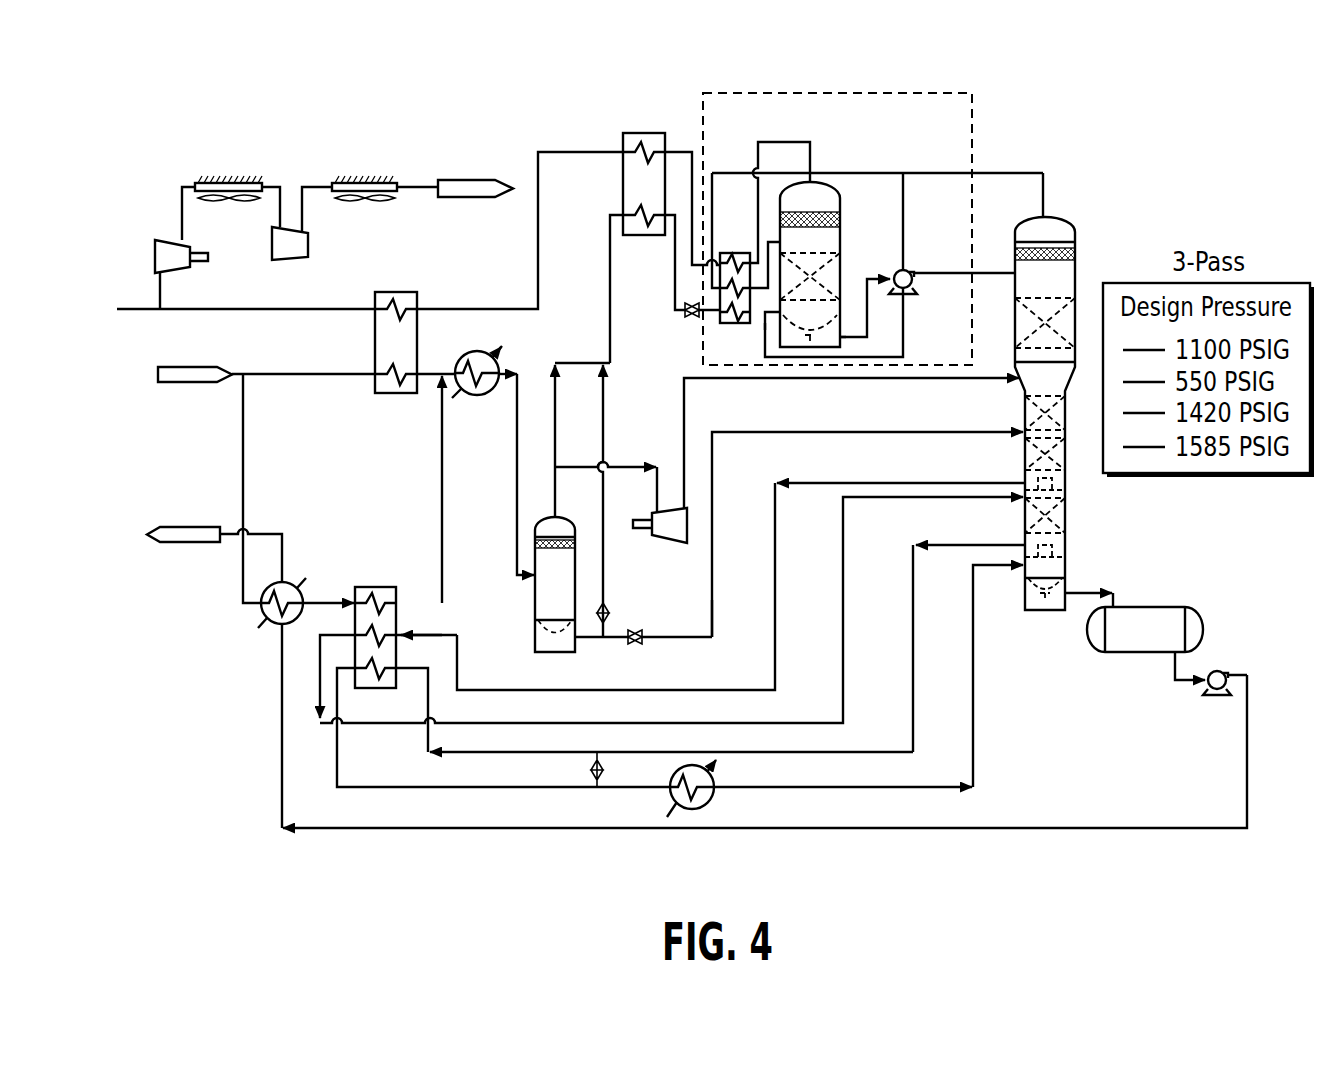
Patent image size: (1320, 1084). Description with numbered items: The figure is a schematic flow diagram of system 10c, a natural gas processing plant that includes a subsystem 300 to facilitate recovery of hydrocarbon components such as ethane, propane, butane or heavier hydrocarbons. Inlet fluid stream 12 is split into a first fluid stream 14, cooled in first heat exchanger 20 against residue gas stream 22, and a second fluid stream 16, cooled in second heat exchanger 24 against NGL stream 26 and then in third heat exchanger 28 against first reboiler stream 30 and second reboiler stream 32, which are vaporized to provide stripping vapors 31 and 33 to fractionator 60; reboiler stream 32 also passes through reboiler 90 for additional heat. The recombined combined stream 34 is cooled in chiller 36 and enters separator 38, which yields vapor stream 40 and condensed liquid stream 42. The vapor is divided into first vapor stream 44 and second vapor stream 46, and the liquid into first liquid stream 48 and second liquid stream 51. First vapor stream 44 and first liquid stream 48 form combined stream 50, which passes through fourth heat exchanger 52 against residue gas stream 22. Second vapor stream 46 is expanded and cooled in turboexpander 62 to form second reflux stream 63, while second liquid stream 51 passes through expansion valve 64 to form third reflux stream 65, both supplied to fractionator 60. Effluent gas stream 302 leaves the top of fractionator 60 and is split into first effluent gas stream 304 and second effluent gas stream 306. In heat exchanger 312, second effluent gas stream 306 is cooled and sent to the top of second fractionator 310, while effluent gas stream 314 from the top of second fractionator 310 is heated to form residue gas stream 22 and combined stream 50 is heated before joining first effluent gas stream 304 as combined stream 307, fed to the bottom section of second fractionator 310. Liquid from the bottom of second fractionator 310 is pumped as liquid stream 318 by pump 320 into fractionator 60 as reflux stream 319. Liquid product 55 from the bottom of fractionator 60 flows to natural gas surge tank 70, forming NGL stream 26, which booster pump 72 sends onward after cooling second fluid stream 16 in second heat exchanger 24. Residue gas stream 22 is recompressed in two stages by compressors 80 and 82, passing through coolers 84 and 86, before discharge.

The system 10c is at (1120, 80).
The inlet fluid stream 12 is at (172, 367).
The first fluid stream 14 is at (325, 374).
The second fluid stream 16 is at (243, 466).
The first heat exchanger 20 is at (400, 292).
The residue gas stream 22 is at (270, 310).
The second heat exchanger 24 is at (275, 626).
The NGL stream 26 is at (182, 527).
The third heat exchanger 28 is at (290, 588).
The first reboiler stream 30 is at (925, 483).
The stripping vapor 31 is at (935, 498).
The second reboiler stream 32 is at (490, 753).
The stripping vapor 33 is at (915, 700).
The combined stream 34 is at (458, 362).
The chiller 36 is at (463, 393).
The separator 38 is at (535, 610).
The vapor stream 40 is at (557, 508).
The condensed liquid stream 42 is at (643, 656).
The first vapor stream 44 is at (557, 406).
The second vapor stream 46 is at (631, 495).
The first liquid stream 48 is at (606, 432).
The combined stream 50 is at (610, 287).
The second liquid stream 51 is at (710, 615).
The fourth heat exchanger 52 is at (640, 133).
The liquid product 55 is at (1095, 593).
The fractionator 60 is at (1078, 240).
The turboexpander 62 is at (657, 508).
The second reflux stream 63 is at (700, 380).
The expansion valve 64 is at (640, 640).
The third reflux stream 65 is at (925, 432).
The natural gas surge tank 70 is at (1150, 607).
The booster pump 72 is at (1228, 672).
The compressor 80 is at (158, 240).
The compressor 82 is at (308, 242).
The cooler 84 is at (197, 182).
The cooler 86 is at (331, 182).
The reboiler 90 is at (690, 810).
The subsystem 300 is at (892, 88).
The effluent gas stream 302 is at (1043, 196).
The first effluent gas stream 304 is at (905, 224).
The second effluent gas stream 306 is at (890, 173).
The combined stream 307 is at (768, 325).
The second fractionator 310 is at (825, 183).
The heat exchanger 312 is at (743, 253).
The effluent gas stream 314 is at (785, 142).
The liquid stream 318 is at (845, 340).
The reflux stream 319 is at (950, 278).
The pump 320 is at (898, 272).